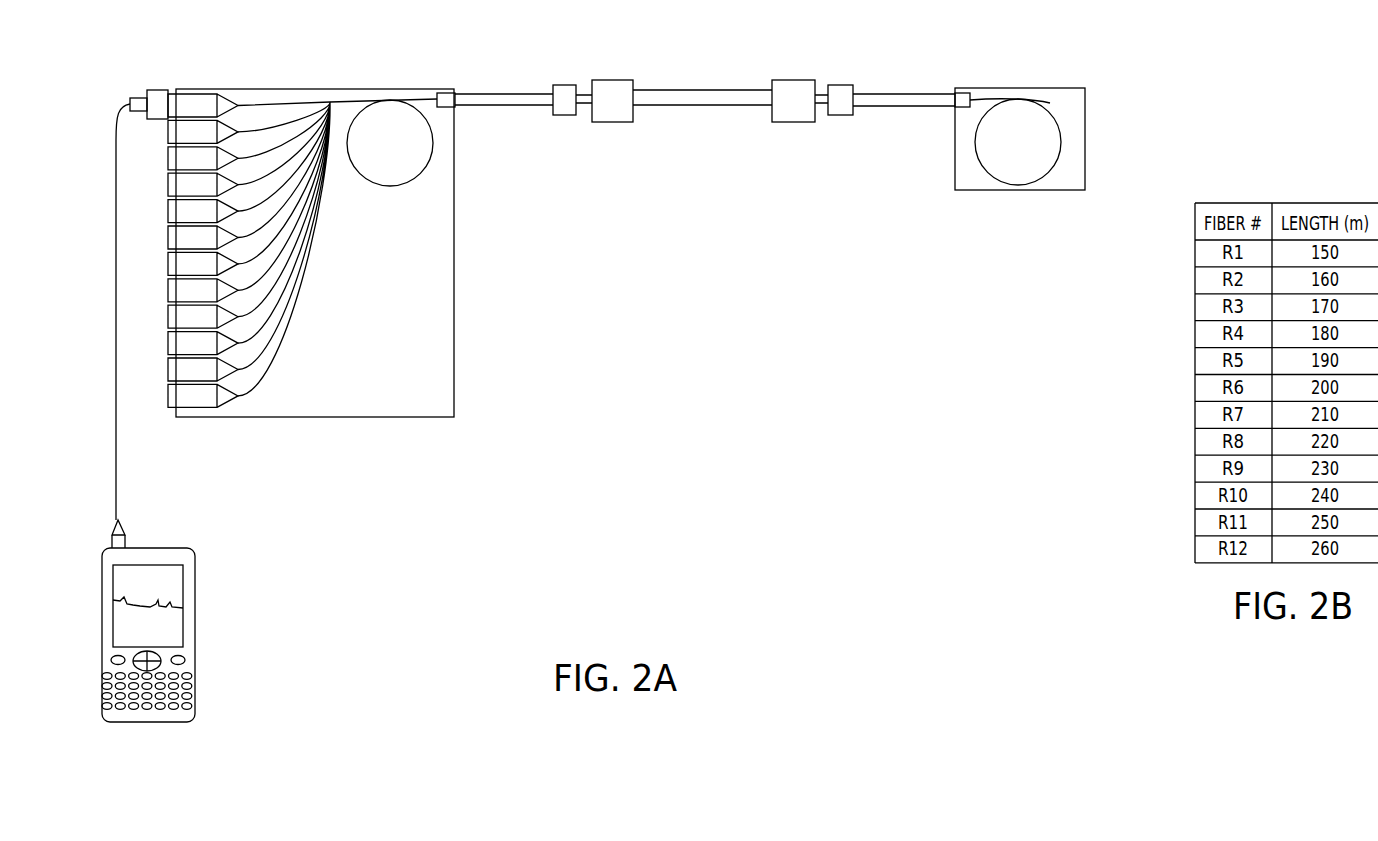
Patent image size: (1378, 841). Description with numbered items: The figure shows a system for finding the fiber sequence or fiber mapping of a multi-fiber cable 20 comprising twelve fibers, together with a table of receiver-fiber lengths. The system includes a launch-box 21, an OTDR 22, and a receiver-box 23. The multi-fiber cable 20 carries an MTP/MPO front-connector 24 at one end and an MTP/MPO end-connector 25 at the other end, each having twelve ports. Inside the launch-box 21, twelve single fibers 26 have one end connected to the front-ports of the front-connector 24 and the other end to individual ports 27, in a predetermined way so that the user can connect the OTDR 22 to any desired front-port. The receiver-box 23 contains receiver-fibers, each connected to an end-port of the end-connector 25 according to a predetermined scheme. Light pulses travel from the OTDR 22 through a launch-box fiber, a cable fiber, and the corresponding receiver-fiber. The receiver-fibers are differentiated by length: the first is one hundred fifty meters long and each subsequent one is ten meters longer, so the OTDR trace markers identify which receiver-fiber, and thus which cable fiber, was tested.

The multi-fiber cable 20 is at (702, 89).
The launch-box 21 is at (362, 88).
The OTDR 22 is at (194, 615).
The receiver-box 23 is at (1022, 87).
The MTP/MPO front-connector 24 is at (612, 79).
The MTP/MPO end-connector 25 is at (793, 79).
The single fibers 26 is at (291, 340).
The individual ports 27 is at (167, 394).